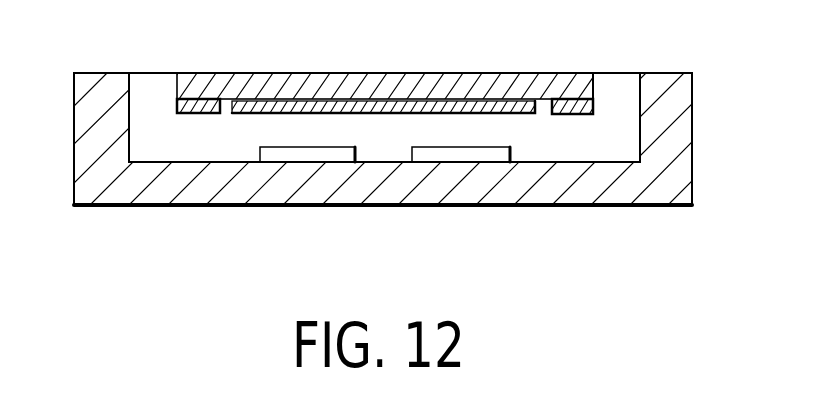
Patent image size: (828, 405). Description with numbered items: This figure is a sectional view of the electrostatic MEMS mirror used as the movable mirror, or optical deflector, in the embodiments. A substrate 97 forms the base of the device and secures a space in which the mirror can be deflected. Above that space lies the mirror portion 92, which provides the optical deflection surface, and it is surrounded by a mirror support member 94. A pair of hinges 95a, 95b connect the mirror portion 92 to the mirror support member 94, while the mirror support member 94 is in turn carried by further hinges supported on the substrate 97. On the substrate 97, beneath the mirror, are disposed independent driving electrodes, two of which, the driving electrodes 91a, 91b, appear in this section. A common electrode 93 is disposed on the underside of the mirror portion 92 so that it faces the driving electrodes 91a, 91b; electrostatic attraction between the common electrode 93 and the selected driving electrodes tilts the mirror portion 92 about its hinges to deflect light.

The substrate 97 is at (98, 178).
The mirror portion 92 is at (320, 76).
The common electrode 93 is at (258, 114).
The mirror support member 94 is at (582, 99).
The hinge 95a is at (222, 92).
The hinge 95b is at (566, 103).
The driving electrode 91a is at (304, 155).
The driving electrode 91b is at (464, 155).